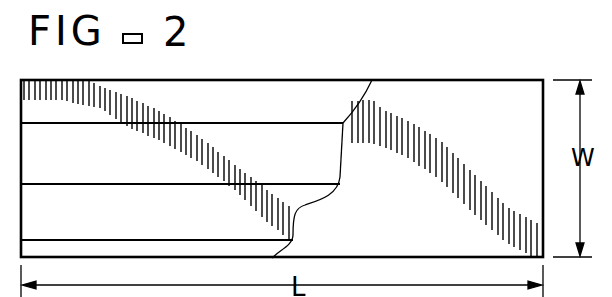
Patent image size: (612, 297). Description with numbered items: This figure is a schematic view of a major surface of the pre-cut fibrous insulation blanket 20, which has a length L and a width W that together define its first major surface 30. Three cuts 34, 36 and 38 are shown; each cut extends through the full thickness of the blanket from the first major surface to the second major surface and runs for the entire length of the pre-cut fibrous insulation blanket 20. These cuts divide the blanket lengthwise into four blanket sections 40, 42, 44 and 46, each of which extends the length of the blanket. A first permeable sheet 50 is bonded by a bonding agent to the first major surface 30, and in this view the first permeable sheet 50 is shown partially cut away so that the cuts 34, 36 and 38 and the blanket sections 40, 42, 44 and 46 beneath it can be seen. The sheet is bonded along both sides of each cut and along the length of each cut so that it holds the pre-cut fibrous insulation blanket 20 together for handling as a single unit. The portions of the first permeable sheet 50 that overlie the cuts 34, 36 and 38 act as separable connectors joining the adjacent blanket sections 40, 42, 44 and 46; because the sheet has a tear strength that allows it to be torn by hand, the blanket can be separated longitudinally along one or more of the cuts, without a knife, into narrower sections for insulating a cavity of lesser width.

The pre-cut fibrous insulation blanket 20 is at (490, 69).
The first major surface 30 is at (411, 118).
The cut 34 is at (73, 240).
The cut 36 is at (77, 184).
The cut 38 is at (183, 123).
The blanket section 40 is at (170, 253).
The blanket section 42 is at (258, 198).
The blanket section 44 is at (243, 150).
The blanket section 46 is at (275, 80).
The first permeable sheet 50 is at (425, 214).